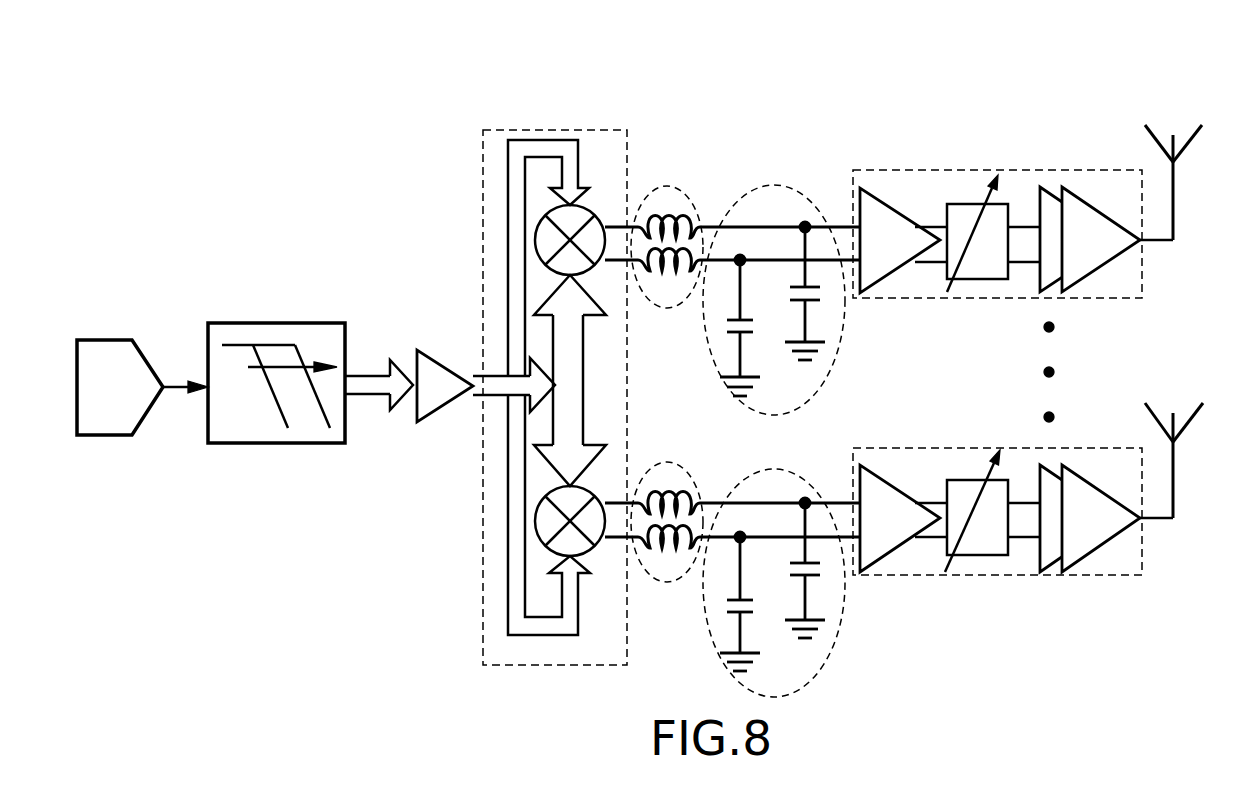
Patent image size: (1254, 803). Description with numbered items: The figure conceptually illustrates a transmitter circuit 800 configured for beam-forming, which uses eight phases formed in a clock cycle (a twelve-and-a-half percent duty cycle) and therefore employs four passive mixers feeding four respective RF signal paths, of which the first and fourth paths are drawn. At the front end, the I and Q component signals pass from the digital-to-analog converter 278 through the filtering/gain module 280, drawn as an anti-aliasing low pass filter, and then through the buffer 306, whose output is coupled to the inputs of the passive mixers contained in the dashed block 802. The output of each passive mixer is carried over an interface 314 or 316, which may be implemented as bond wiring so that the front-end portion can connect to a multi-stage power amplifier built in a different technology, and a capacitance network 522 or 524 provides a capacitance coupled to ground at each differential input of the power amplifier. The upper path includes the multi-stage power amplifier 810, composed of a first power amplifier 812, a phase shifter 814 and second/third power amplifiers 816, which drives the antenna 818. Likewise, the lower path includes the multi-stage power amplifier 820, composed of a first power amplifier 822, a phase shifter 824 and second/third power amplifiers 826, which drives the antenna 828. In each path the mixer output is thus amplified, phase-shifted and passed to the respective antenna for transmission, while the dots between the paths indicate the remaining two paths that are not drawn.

The transmitter circuit 800 is at (1012, 39).
The digital-to-analog converter 278 is at (145, 356).
The filtering/gain module 280 is at (337, 323).
The buffer 306 is at (460, 378).
The mixer / splitter block 802 is at (627, 148).
The interface 314 is at (682, 192).
The interface 316 is at (688, 473).
The capacitance network 522 is at (786, 188).
The capacitance network 524 is at (804, 480).
The multi-stage power amplifier 810 is at (997, 229).
The first power amplifier 812 is at (897, 269).
The phase shifter 814 is at (948, 205).
The second/third power amplifiers 816 is at (1091, 272).
The antenna 818 is at (1173, 192).
The multi-stage power amplifier 820 is at (997, 505).
The first power amplifier 822 is at (890, 553).
The phase shifter 824 is at (1002, 555).
The second/third power amplifiers 826 is at (1092, 551).
The antenna 828 is at (1173, 478).